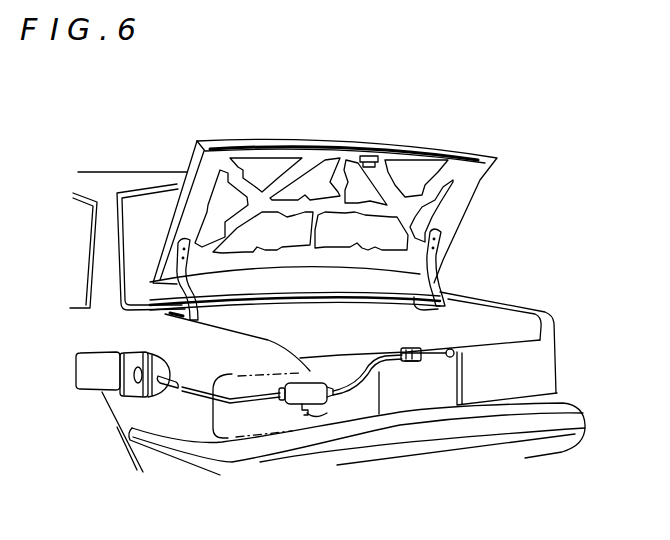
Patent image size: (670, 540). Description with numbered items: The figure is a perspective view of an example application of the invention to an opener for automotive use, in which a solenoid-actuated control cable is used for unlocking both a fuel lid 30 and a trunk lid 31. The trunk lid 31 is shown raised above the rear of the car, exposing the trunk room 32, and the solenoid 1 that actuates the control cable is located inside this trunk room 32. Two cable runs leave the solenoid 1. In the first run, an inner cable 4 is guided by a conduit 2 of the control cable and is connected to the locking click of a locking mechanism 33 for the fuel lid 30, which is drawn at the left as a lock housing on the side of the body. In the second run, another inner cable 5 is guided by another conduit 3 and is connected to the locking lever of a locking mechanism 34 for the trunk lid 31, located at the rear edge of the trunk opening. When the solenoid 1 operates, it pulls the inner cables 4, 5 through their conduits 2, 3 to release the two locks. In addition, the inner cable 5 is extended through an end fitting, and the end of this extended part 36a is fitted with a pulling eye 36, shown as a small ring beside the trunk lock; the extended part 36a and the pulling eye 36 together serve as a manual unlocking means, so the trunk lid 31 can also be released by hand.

The solenoid 1 is at (294, 405).
The conduit 2 is at (232, 402).
The conduit 3 is at (368, 375).
The inner cable 4 is at (180, 388).
The inner cable 5 is at (400, 363).
The fuel lid 30 is at (97, 380).
The trunk lid 31 is at (404, 147).
The trunk room 32 is at (510, 322).
The locking mechanism 33 is at (150, 397).
The locking mechanism 34 is at (423, 351).
The pulling eye 36 is at (452, 358).
The extended part 36a is at (436, 355).